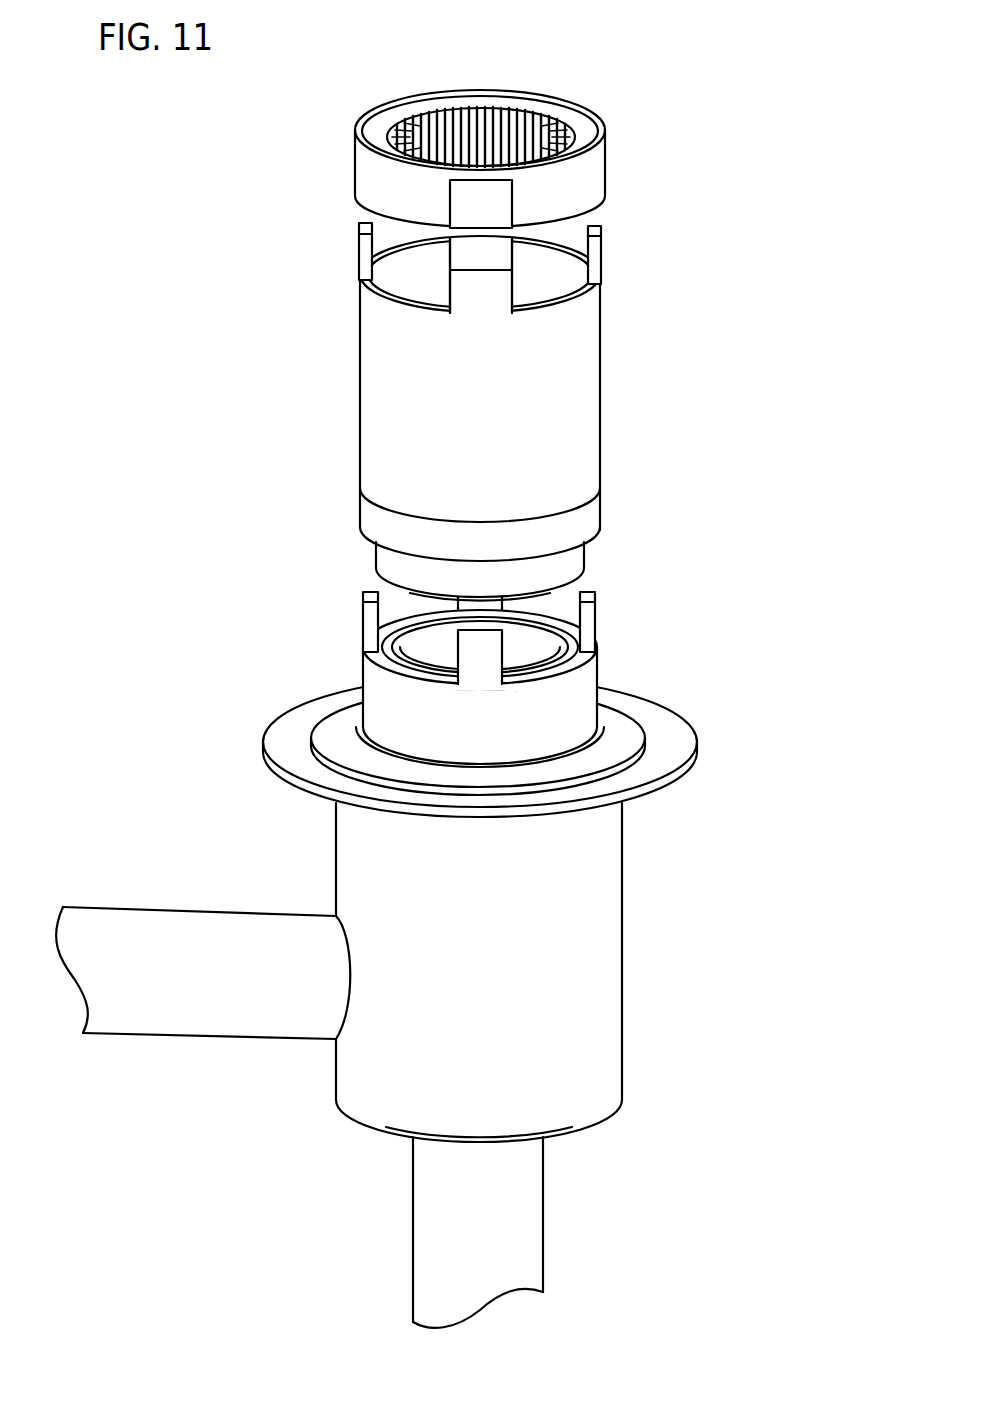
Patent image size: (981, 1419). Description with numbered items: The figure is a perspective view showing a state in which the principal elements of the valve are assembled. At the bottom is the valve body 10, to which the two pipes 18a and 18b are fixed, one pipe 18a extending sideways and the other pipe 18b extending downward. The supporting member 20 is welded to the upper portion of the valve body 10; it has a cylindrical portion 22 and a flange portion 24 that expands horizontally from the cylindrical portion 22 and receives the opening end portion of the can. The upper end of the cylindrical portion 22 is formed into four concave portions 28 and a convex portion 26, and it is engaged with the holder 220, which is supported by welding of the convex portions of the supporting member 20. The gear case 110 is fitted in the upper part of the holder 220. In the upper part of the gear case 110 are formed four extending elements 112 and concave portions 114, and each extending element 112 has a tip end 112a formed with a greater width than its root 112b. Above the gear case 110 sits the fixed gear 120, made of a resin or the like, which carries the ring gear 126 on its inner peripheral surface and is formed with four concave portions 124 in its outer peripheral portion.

The valve body 10 is at (610, 934).
The pipe 18a is at (208, 1023).
The pipe 18b is at (430, 1245).
The supporting member 20 is at (625, 720).
The cylindrical portion 22 is at (390, 697).
The flange portion 24 is at (673, 748).
The convex portion 26 is at (590, 622).
The concave portion 28 is at (597, 645).
The gear case 110 is at (582, 400).
The extending element 112 is at (478, 293).
The tip end 112a is at (540, 242).
The root 112b is at (530, 312).
The concave portion 114 is at (590, 265).
The fixed gear 120 is at (583, 180).
The concave portion 124 is at (470, 202).
The ring gear 126 is at (472, 107).
The holder 220 is at (583, 516).